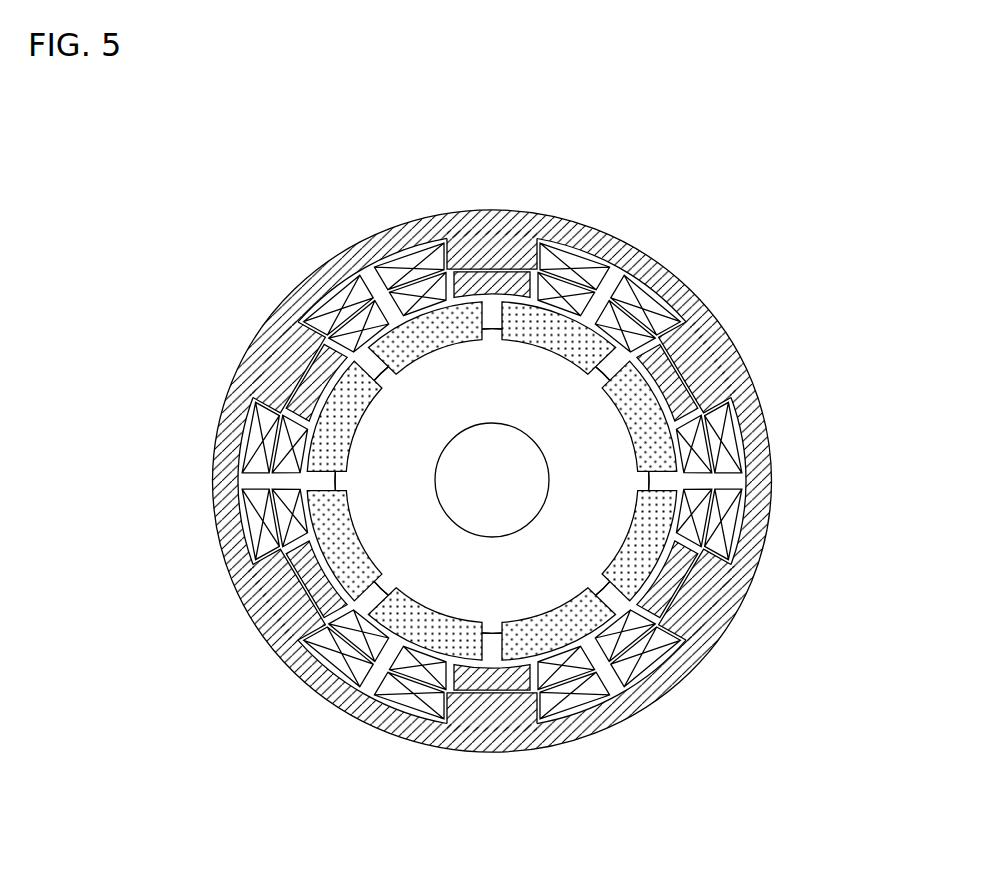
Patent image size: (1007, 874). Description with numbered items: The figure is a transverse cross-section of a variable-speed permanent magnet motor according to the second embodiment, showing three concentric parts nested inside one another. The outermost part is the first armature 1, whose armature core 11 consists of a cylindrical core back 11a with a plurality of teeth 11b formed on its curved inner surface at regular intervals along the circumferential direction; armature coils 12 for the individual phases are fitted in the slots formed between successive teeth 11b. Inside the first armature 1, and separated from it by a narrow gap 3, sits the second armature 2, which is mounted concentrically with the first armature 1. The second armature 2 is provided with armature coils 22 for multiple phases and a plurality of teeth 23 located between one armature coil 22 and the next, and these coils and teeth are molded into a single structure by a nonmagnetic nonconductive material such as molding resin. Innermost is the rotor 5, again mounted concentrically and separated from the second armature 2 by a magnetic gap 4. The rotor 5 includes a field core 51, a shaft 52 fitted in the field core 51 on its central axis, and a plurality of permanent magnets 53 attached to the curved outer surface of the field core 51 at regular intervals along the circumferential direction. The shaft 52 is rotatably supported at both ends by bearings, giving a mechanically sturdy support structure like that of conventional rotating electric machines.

The first armature 1 is at (668, 272).
The second armature 2 is at (718, 445).
The narrow gap 3 is at (505, 702).
The magnetic gap 4 is at (488, 652).
The rotor 5 is at (655, 385).
The armature core 11 is at (517, 97).
The core back 11a is at (380, 278).
The teeth 11b is at (473, 250).
The armature coils 12 is at (595, 262).
The armature coils 22 is at (727, 320).
The teeth 23 is at (503, 273).
The field core 51 is at (550, 592).
The shaft 52 is at (525, 513).
The permanent magnets 53 is at (433, 318).